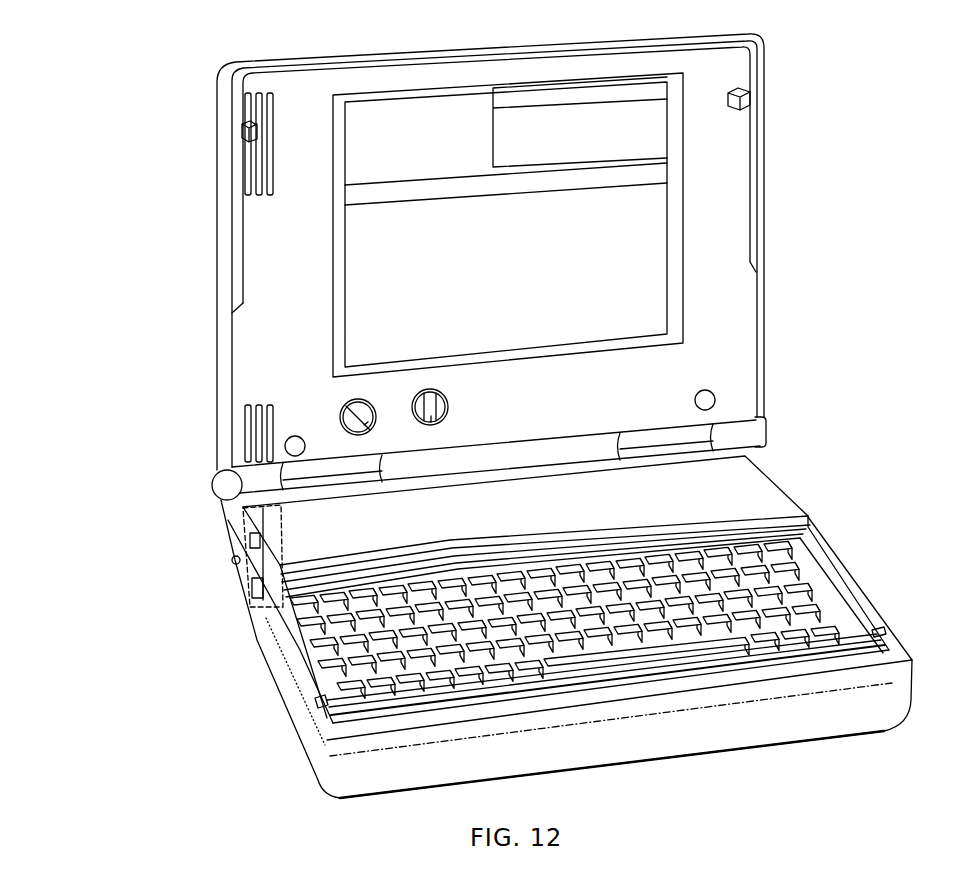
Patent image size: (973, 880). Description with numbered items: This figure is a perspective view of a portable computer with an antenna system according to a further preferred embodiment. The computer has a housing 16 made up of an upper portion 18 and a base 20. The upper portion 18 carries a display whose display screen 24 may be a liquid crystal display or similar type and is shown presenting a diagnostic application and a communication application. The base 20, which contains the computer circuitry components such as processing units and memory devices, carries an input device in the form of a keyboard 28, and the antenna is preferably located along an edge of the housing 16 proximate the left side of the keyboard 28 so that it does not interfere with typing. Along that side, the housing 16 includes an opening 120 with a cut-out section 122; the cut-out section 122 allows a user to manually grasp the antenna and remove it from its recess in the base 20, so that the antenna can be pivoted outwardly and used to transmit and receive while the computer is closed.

The housing 16 is at (793, 720).
The upper portion 18 is at (722, 190).
The base 20 is at (658, 748).
The display screen 24 is at (642, 273).
The keyboard 28 is at (817, 602).
The opening 120 is at (245, 584).
The cut-out section 122 is at (232, 558).